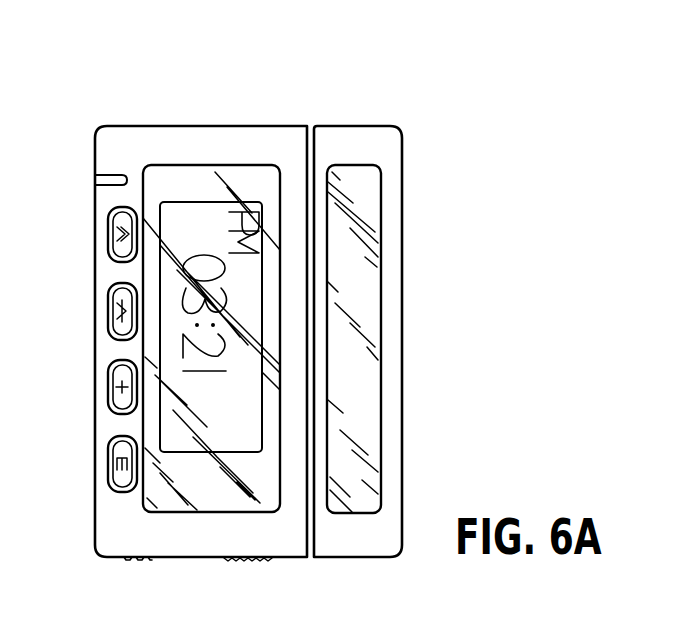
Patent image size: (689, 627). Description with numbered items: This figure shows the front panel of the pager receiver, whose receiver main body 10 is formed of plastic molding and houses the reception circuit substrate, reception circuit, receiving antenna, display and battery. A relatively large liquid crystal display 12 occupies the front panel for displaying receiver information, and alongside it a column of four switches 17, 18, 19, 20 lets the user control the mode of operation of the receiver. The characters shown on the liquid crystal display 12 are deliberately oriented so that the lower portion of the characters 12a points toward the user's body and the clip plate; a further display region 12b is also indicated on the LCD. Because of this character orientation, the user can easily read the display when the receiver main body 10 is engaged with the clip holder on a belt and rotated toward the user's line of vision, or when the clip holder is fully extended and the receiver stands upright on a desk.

The receiver main body 10 is at (405, 130).
The liquid crystal display 12 is at (198, 213).
The lower portion of the characters 12a is at (173, 222).
The second display region (AM/PM indicator) 12b is at (249, 268).
The switch 17 is at (113, 236).
The switch 18 is at (113, 310).
The switch 19 is at (113, 397).
The switch 20 is at (113, 460).